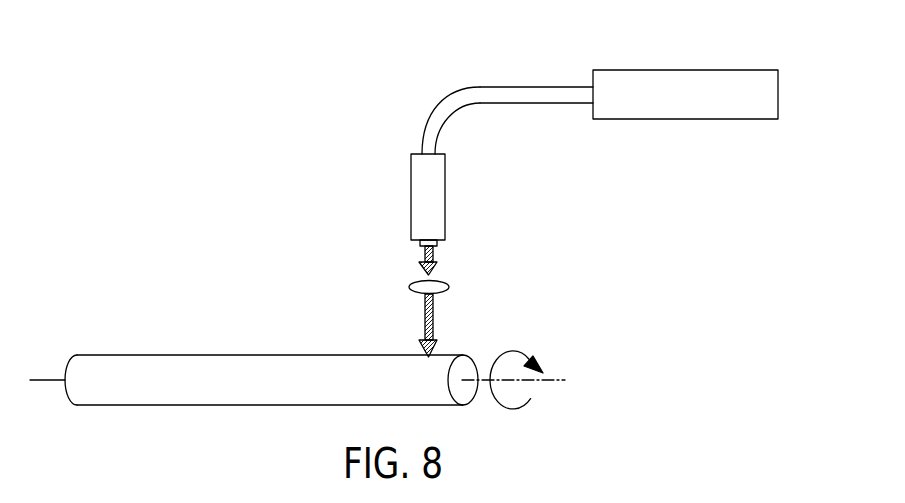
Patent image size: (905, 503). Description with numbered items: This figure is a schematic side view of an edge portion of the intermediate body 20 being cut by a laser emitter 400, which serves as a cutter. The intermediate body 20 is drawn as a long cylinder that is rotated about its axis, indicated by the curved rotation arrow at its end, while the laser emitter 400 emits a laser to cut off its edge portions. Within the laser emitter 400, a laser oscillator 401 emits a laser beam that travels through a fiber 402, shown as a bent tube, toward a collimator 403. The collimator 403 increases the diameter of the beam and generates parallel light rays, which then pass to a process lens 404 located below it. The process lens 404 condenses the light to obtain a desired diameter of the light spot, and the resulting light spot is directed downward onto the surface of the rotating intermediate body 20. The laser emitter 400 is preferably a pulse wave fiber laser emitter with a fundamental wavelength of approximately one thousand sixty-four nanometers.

The intermediate body 20 is at (240, 355).
The laser emitter 400 is at (528, 75).
The laser oscillator 401 is at (747, 69).
The fiber 402 is at (545, 104).
The collimator 403 is at (446, 193).
The process lens 404 is at (449, 287).